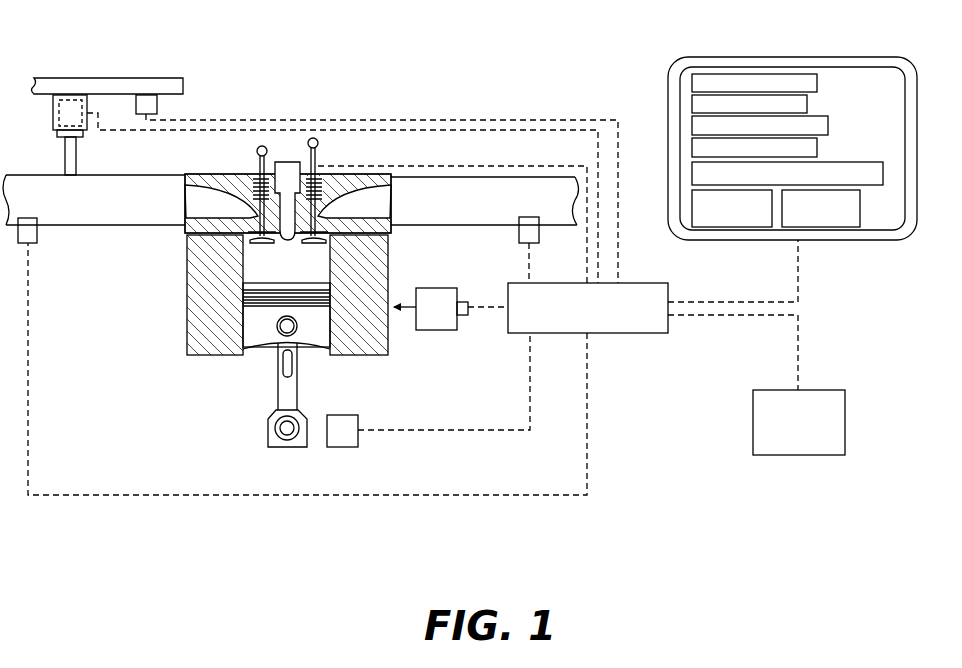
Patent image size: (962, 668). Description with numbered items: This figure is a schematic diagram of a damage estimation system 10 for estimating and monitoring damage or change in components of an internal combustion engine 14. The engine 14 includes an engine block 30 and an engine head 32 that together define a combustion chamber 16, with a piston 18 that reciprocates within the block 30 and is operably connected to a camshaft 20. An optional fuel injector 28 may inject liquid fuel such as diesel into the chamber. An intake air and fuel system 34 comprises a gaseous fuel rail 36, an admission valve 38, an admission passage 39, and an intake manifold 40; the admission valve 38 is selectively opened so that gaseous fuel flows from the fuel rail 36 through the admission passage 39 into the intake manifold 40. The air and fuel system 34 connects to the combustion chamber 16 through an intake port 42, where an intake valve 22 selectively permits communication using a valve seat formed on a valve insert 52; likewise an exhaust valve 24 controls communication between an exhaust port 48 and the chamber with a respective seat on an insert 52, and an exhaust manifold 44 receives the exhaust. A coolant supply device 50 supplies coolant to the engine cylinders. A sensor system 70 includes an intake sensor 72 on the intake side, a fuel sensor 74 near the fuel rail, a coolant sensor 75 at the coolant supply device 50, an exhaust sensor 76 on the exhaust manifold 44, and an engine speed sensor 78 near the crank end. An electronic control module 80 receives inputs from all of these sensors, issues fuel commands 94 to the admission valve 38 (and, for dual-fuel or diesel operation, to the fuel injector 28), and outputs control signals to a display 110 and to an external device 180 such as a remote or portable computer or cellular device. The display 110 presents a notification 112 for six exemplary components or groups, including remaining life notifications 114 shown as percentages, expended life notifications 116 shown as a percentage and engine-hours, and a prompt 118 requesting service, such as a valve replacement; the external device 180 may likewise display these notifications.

The damage estimation system 10 is at (258, 70).
The internal combustion engine 14 is at (202, 313).
The combustion chamber 16 is at (250, 267).
The piston 18 is at (258, 345).
The camshaft 20 is at (277, 439).
The intake valve 22 is at (258, 150).
The exhaust valve 24 is at (318, 148).
The fuel injector 28 is at (290, 166).
The engine block 30 is at (215, 300).
The engine head 32 is at (234, 193).
The intake air and fuel system 34 is at (63, 74).
The gaseous fuel rail 36 is at (123, 82).
The admission valve 38 is at (60, 110).
The admission passage 39 is at (66, 160).
The intake manifold 40 is at (118, 226).
The intake port 42 is at (190, 233).
The exhaust manifold 44 is at (502, 226).
The exhaust port 48 is at (392, 235).
The coolant supply device 50 is at (430, 325).
The valve insert 52 is at (304, 244).
The sensor system 70 is at (607, 418).
The intake sensor 72 is at (32, 228).
The fuel sensor 74 is at (152, 103).
The coolant sensor 75 is at (462, 302).
The exhaust sensor 76 is at (540, 232).
The engine speed sensor 78 is at (342, 428).
The electronic control module 80 is at (413, 367).
The fuel commands 94 is at (140, 132).
The display 110 is at (772, 57).
The notification 112 is at (878, 71).
The remaining life notification 114 is at (692, 149).
The expended life notification 116 is at (692, 209).
The prompt 118 is at (850, 228).
The external device 180 is at (799, 422).